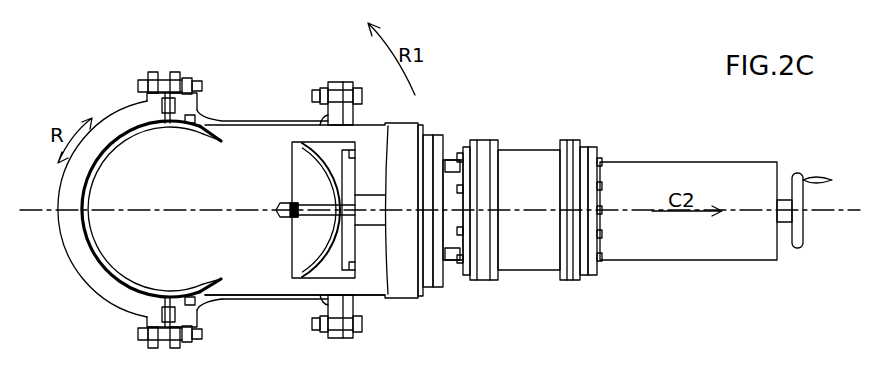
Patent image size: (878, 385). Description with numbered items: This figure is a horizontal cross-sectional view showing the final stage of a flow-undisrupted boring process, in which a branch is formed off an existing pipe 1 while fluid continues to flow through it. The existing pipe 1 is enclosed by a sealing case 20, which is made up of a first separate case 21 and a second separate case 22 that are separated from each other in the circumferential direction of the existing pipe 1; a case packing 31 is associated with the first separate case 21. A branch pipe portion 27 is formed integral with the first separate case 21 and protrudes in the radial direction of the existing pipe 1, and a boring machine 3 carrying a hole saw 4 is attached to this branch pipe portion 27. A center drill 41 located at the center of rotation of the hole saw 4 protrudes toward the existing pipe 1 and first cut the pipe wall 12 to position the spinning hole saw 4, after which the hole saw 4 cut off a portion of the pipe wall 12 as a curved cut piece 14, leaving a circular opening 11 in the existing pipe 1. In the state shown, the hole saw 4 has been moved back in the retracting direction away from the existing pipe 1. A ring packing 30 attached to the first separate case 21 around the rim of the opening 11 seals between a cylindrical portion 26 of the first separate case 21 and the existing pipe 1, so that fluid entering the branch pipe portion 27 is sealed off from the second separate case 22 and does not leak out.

The existing pipe 1 is at (88, 195).
The boring machine 3 is at (648, 170).
The hole saw 4 is at (320, 142).
The opening 11 is at (243, 178).
The pipe wall 12 is at (133, 283).
The curved cut piece 14 is at (327, 253).
The sealing case 20 is at (80, 250).
The first separate case 21 is at (257, 300).
The second separate case 22 is at (128, 302).
The cylindrical portion 26 is at (207, 118).
The branch pipe portion 27 is at (272, 300).
The ring packing 30 is at (193, 117).
The case packing 31 is at (160, 108).
The center drill 41 is at (285, 203).